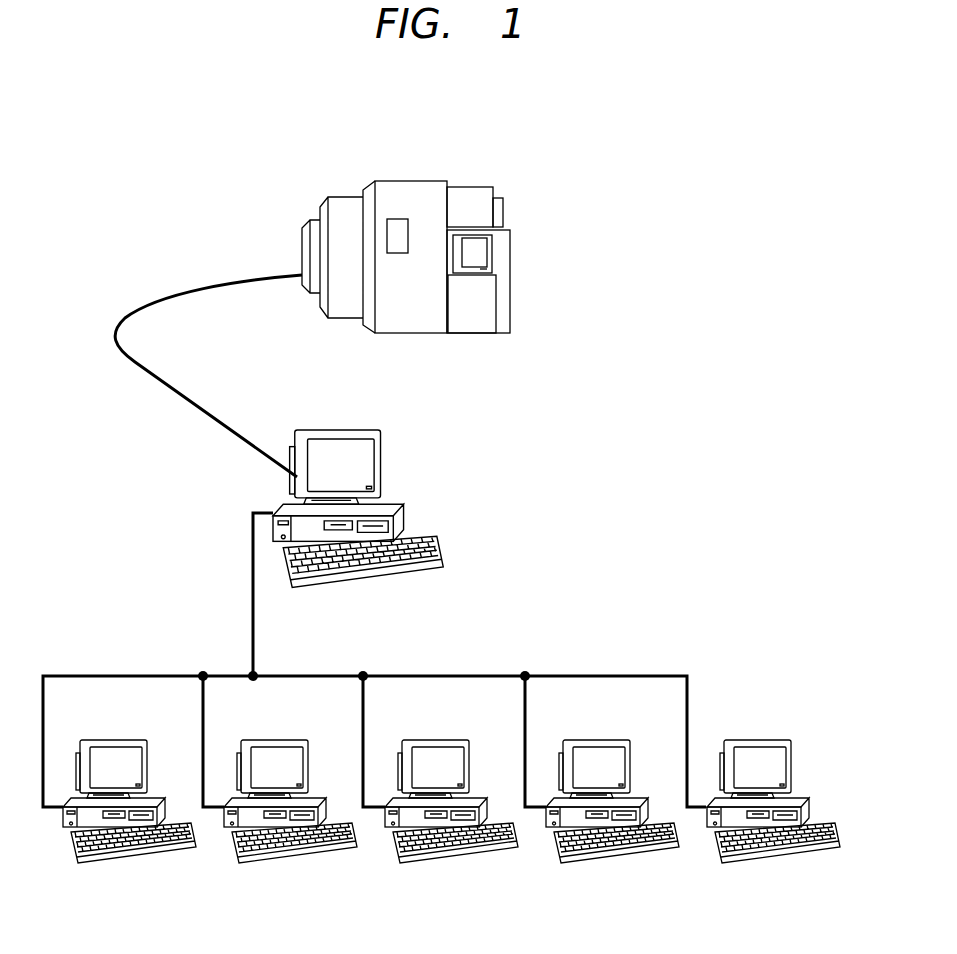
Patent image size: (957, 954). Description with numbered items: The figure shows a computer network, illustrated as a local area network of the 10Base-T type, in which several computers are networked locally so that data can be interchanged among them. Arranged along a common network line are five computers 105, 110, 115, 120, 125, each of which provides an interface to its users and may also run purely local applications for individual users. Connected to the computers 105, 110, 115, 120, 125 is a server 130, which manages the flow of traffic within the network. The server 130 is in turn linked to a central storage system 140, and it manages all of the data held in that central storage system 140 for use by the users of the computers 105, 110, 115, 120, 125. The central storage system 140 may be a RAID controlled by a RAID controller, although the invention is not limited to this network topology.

The computer 105 is at (129, 832).
The computer 110 is at (290, 832).
The computer 115 is at (451, 832).
The computer 120 is at (612, 832).
The computer 125 is at (773, 832).
The server 130 is at (382, 467).
The central storage system 140 is at (409, 181).